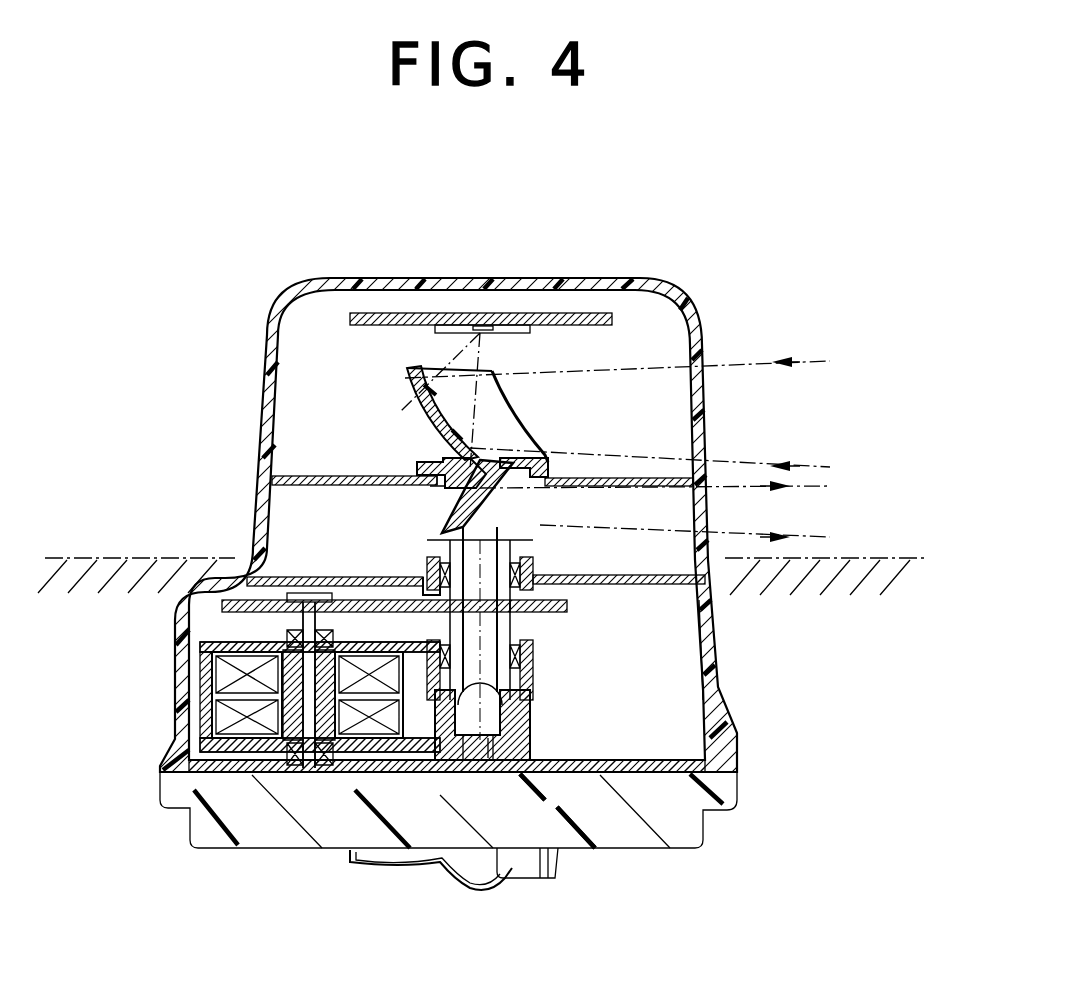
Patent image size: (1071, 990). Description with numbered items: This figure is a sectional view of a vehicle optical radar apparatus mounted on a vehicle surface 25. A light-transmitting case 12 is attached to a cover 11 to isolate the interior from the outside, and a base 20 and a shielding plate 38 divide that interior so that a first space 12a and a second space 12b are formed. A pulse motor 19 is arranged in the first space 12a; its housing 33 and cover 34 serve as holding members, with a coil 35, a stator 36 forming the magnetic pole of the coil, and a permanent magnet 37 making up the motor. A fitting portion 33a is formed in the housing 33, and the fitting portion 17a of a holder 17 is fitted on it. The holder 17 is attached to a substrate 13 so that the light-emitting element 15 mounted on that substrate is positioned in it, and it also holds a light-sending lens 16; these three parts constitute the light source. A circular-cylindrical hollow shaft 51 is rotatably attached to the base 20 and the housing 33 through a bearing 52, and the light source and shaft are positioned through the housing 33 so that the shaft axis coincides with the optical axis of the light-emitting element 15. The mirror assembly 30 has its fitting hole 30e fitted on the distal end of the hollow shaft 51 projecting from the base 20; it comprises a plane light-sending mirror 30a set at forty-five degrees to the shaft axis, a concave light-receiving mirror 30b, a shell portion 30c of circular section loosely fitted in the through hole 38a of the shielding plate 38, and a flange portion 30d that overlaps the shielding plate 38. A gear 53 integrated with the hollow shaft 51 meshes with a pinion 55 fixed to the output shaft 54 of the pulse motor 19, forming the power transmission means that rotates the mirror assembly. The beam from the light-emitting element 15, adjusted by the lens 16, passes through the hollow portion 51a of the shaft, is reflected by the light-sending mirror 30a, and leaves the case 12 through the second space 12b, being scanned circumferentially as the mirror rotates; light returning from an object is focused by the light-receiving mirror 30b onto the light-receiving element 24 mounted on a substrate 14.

The cover 11 is at (714, 816).
The case 12 is at (660, 350).
The first space 12a is at (704, 622).
The second space 12b is at (692, 500).
The substrate 13 is at (470, 771).
The substrate 14 is at (585, 322).
The light-emitting element 15 is at (410, 764).
The light-sending lens 16 is at (542, 760).
The holder 17 is at (541, 773).
The fitting portion 17a is at (532, 722).
The pulse motor 19 is at (212, 670).
The base 20 is at (255, 565).
The light-receiving element 24 is at (500, 325).
The vehicle surface 25 is at (862, 558).
The mirror assembly 30 is at (407, 373).
The light-sending mirror 30a is at (553, 482).
The light-receiving mirror 30b is at (447, 413).
The shell portion 30c is at (428, 432).
The flange portion 30d is at (432, 456).
The fitting hole 30e is at (500, 514).
The housing 33 is at (232, 690).
The fitting portion 33a is at (532, 705).
The cover 34 is at (198, 778).
The coil 35 is at (225, 742).
The stator 36 is at (215, 648).
The permanent magnet 37 is at (262, 602).
The shielding plate 38 is at (268, 470).
The through hole 38a is at (442, 490).
The hollow shaft 51 is at (447, 568).
The hollow portion 51a is at (530, 618).
The bearing 52 is at (532, 572).
The gear 53 is at (428, 588).
The output shaft 54 is at (310, 768).
The pinion 55 is at (252, 578).